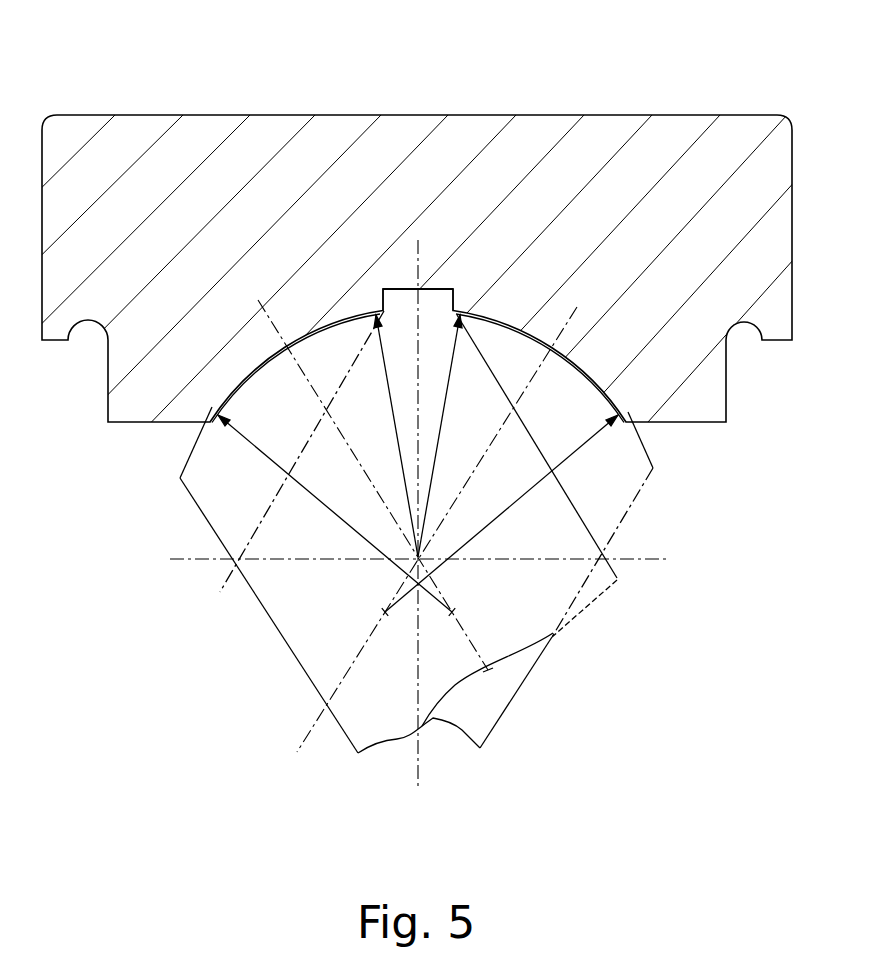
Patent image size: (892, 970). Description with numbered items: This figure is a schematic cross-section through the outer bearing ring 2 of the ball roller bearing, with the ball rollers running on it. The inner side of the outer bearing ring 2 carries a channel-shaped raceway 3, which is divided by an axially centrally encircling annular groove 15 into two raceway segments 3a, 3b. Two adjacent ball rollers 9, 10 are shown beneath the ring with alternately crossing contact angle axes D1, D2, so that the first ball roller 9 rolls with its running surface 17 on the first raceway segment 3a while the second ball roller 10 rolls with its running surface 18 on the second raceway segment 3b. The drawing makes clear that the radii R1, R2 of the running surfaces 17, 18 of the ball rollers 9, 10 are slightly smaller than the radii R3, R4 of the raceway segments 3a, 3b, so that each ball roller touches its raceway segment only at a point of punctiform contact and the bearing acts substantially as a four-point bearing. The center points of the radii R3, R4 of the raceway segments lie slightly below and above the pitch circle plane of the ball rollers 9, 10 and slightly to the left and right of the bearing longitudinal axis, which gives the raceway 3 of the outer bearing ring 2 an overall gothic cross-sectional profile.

The outer bearing ring 2 is at (420, 165).
The raceway 3 is at (387, 270).
The raceway segment 3a is at (358, 310).
The raceway segment 3b is at (465, 312).
The annular groove 15 is at (432, 289).
The ball roller 9 is at (230, 505).
The ball roller 10 is at (600, 502).
The running surface 17 is at (197, 440).
The running surface 18 is at (638, 433).
The contact angle axis D1 is at (260, 300).
The contact angle axis D2 is at (580, 302).
The radius of running surface R1 is at (418, 428).
The radius of running surface R2 is at (418, 428).
The radius of raceway segment R3 is at (336, 515).
The radius of raceway segment R4 is at (500, 515).